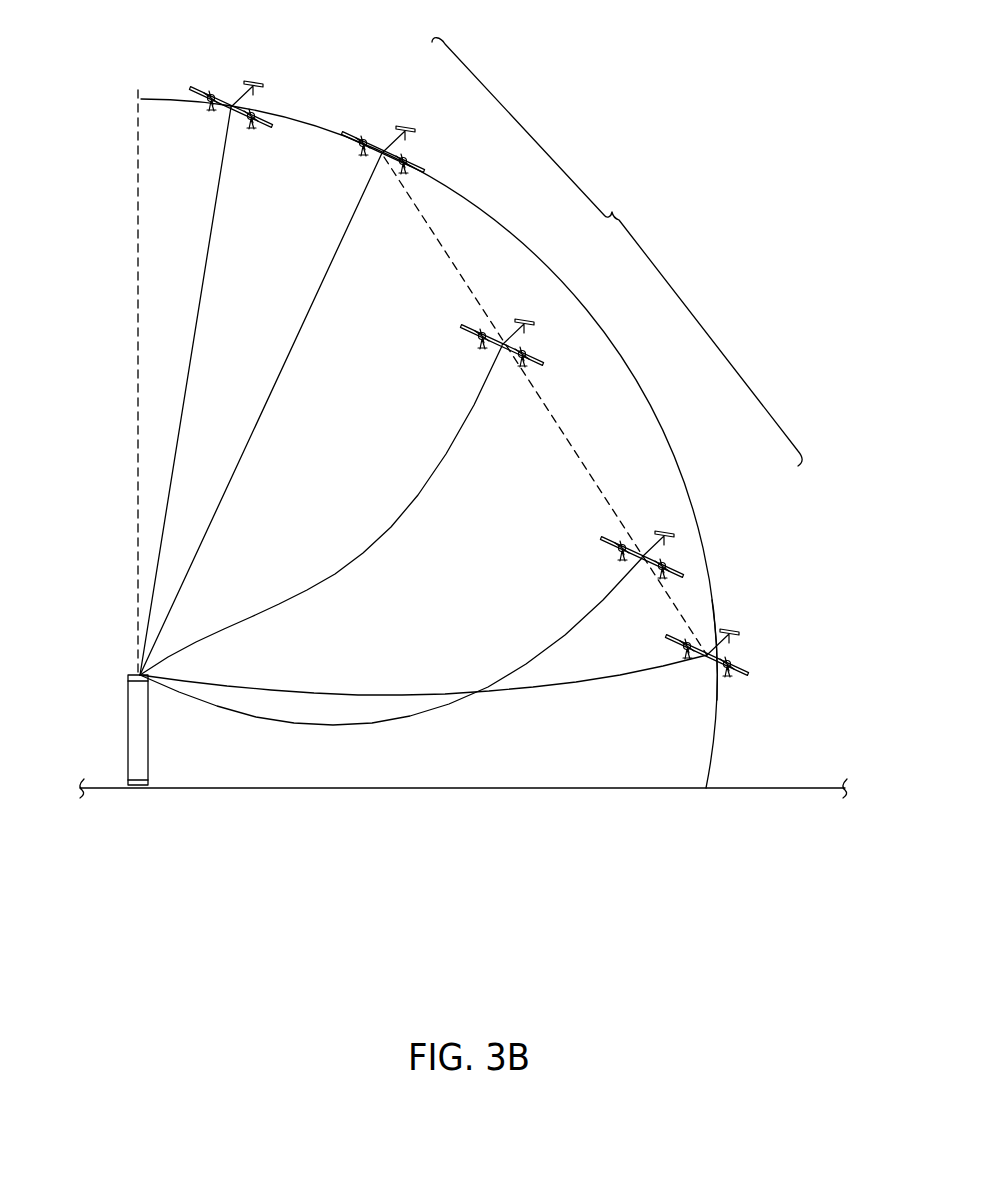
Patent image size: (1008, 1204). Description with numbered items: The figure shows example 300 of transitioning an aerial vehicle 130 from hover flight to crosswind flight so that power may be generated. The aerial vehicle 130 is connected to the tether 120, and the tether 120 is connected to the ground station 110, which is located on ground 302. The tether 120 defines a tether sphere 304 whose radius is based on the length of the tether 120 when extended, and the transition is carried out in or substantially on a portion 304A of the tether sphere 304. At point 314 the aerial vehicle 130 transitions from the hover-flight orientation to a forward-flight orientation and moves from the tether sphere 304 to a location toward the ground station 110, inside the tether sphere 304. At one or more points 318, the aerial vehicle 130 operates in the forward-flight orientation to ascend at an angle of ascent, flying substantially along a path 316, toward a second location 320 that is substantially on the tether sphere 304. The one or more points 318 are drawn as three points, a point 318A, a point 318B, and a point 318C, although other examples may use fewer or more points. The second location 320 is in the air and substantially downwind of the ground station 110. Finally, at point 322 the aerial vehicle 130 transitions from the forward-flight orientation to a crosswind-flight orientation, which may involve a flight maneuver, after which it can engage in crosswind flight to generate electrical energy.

The ground station 110 is at (128, 752).
The tether 120 is at (207, 268).
The aerial vehicle 130 is at (257, 128).
The example 300 is at (663, 119).
The ground 302 is at (752, 786).
The tether sphere 304 is at (718, 702).
The portion of the tether sphere 304A is at (603, 760).
The point 314 is at (730, 598).
The path 316 is at (670, 612).
The one or more points 318 is at (617, 252).
The point 318A is at (694, 505).
The point 318B is at (545, 276).
The point 318C is at (418, 114).
The second location 320 is at (383, 145).
The point 322 is at (272, 68).